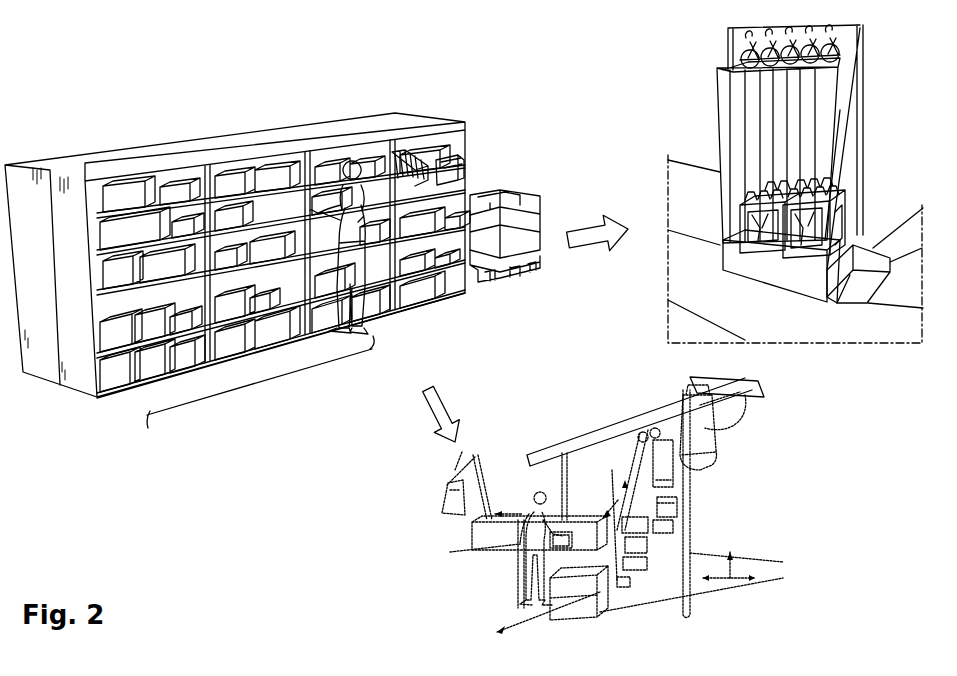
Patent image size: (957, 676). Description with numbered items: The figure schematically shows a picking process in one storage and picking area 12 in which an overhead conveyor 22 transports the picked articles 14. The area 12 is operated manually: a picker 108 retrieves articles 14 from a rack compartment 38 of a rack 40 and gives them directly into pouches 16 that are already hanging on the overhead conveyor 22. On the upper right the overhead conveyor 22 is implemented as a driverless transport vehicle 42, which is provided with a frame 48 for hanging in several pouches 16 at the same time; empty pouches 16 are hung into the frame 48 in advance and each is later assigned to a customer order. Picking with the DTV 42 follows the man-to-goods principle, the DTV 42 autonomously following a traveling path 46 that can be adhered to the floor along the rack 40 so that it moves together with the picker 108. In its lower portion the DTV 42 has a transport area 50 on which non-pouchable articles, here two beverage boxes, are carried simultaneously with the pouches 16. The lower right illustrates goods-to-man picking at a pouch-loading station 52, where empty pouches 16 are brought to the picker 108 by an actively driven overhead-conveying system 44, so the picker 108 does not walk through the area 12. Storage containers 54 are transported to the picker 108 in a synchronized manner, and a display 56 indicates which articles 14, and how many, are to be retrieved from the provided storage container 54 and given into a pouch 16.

The storage and picking area 12 is at (298, 320).
The article 14 is at (245, 294).
The pouch 16 is at (716, 107).
The overhead conveyor 22 is at (666, 338).
The rack compartment 38 is at (290, 207).
The rack 40 is at (74, 390).
The driverless transport vehicle (DTV) 42 is at (873, 267).
The overhead-conveying system 44 is at (586, 429).
The traveling path 46 is at (272, 387).
The frame 48 is at (866, 35).
The transport area 50 is at (838, 275).
The pouch-loading station 52 is at (518, 502).
The storage container 54 is at (606, 592).
The display 56 is at (560, 522).
The picker 108 is at (372, 328).